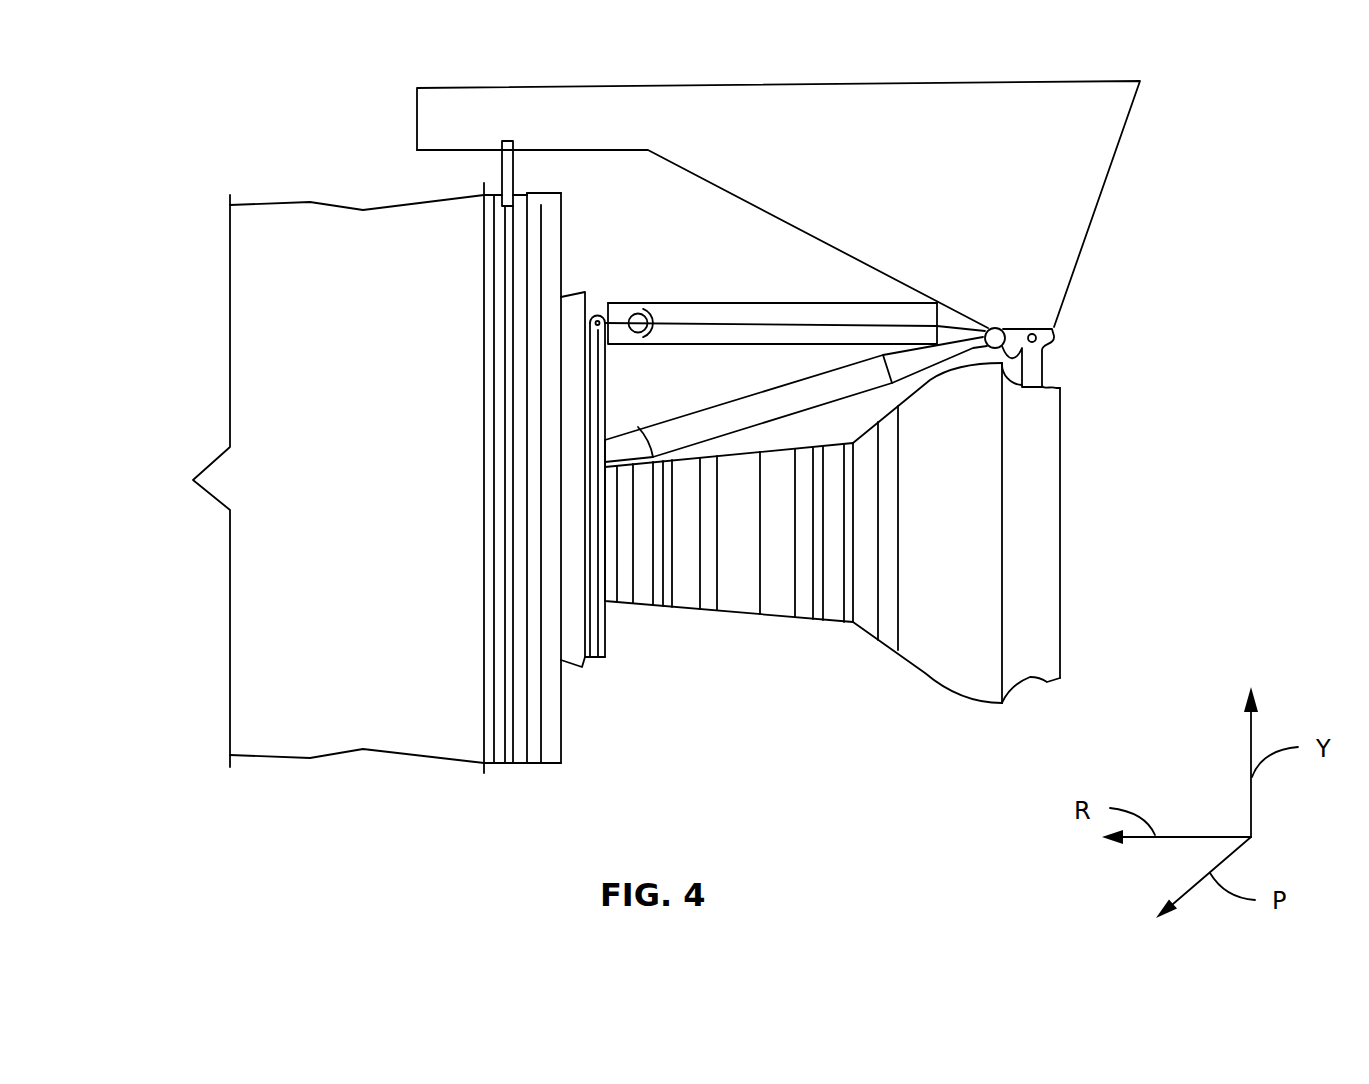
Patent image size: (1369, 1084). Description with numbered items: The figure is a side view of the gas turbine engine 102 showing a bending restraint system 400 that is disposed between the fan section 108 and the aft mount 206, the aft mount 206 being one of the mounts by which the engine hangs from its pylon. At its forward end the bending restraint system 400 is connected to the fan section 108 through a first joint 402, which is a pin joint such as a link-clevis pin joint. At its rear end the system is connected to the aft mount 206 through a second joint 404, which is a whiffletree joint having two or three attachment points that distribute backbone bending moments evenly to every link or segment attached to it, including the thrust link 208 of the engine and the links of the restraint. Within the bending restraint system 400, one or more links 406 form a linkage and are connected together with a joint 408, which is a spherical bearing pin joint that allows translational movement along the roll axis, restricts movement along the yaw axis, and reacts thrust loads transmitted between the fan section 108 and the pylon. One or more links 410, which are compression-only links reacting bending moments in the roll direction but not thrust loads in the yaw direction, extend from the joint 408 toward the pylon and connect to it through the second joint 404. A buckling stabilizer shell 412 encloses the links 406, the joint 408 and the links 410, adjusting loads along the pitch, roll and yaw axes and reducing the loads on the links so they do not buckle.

The gas turbine engine 102 is at (163, 144).
The fan section 108 is at (230, 362).
The aft mount 206 is at (1053, 328).
The thrust link 208 is at (760, 385).
The bending restraint system 400 is at (704, 243).
The first joint 402 is at (594, 313).
The second joint 404 is at (985, 328).
The link 406 is at (608, 327).
The joint 408 is at (650, 336).
The link 410 is at (700, 323).
The buckling stabilizer shell 412 is at (808, 303).